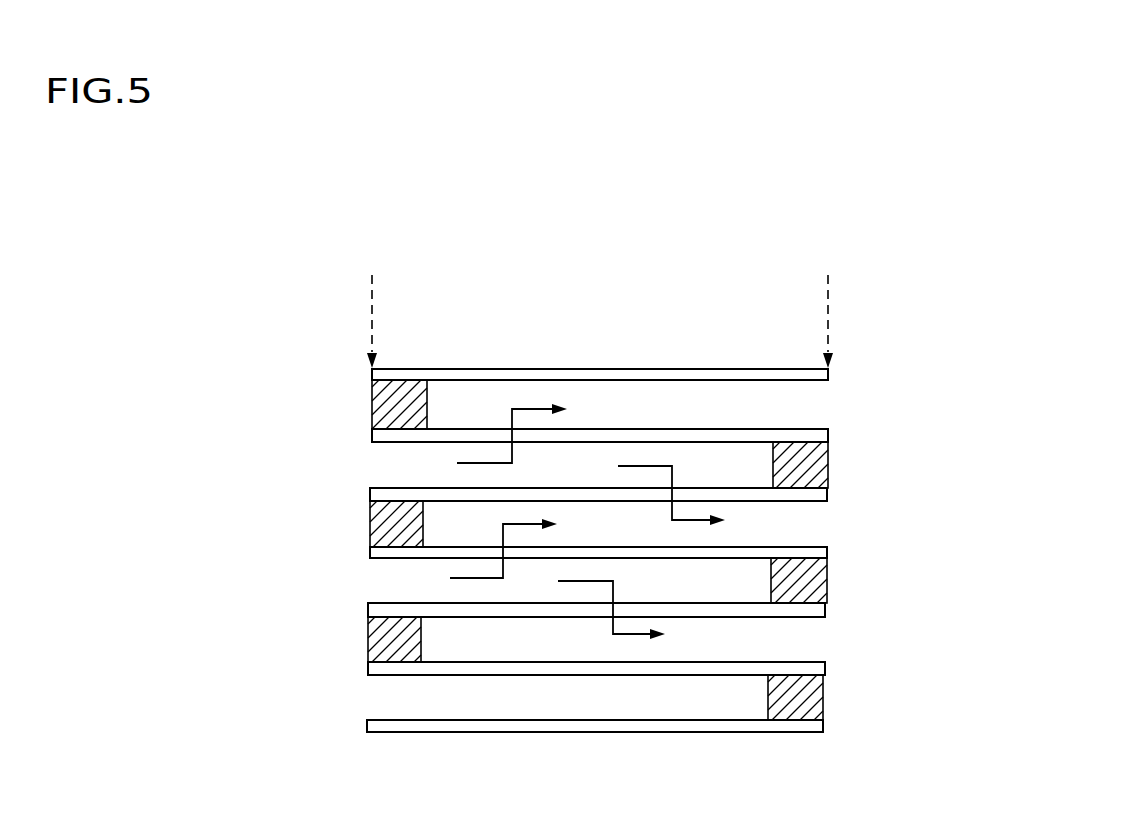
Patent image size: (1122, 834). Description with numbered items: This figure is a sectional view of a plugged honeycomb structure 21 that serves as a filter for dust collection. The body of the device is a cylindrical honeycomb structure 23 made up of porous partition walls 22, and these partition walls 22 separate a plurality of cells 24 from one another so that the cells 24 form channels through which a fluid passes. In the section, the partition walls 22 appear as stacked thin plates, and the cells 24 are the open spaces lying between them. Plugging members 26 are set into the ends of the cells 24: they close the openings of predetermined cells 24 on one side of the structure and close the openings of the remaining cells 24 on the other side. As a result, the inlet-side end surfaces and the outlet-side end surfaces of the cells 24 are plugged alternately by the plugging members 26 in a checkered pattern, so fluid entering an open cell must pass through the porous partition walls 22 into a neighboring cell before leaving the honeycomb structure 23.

The plugged honeycomb structure 21 is at (856, 160).
The porous partition wall 22 is at (758, 428).
The honeycomb structure 23 is at (718, 732).
The cell 24 is at (535, 707).
The plugging member 26 is at (387, 403).